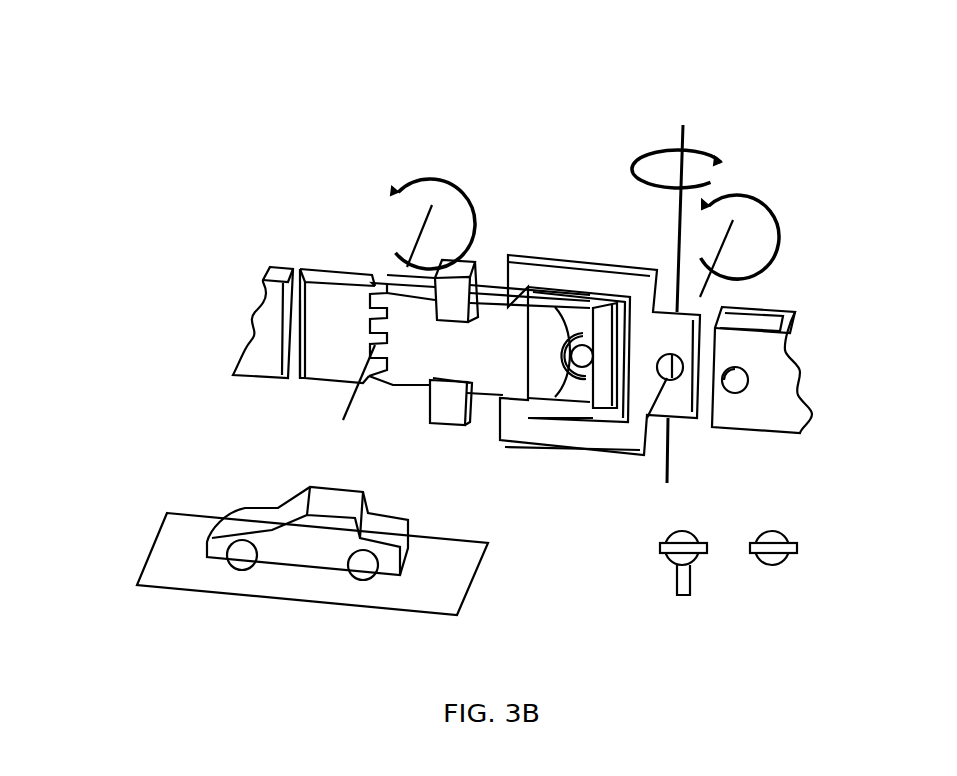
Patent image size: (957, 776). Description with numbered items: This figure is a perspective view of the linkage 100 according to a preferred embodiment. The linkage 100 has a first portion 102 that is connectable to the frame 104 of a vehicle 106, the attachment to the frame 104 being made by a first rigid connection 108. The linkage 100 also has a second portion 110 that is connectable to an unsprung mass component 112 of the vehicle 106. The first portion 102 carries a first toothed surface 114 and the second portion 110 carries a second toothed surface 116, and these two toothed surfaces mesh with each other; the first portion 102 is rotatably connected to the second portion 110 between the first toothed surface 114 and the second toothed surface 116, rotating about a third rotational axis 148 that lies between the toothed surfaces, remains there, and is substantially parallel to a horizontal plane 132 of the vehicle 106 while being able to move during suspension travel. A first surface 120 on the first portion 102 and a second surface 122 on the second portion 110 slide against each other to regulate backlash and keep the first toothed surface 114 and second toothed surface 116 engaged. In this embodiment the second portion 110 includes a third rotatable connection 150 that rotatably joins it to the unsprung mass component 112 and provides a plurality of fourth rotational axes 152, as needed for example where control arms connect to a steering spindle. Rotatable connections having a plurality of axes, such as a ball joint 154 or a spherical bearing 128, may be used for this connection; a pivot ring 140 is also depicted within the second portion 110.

The linkage 100 is at (430, 121).
The first portion 102 is at (332, 300).
The frame 104 is at (257, 362).
The vehicle 106 is at (247, 520).
The first rigid connection 108 is at (300, 378).
The second portion 110 is at (625, 283).
The unsprung mass component 112 is at (773, 413).
The first toothed surface 114 is at (377, 298).
The second toothed surface 116 is at (389, 292).
The first surface 120 is at (590, 395).
The second surface 122 is at (566, 340).
The spherical bearing 128 is at (787, 563).
The horizontal plane 132 is at (165, 555).
The pivot ring 140 is at (588, 335).
The third rotational axis 148 is at (425, 233).
The third rotatable connection 150 is at (669, 378).
The fourth rotational axis 152 is at (688, 142).
The ball joint 154 is at (665, 563).